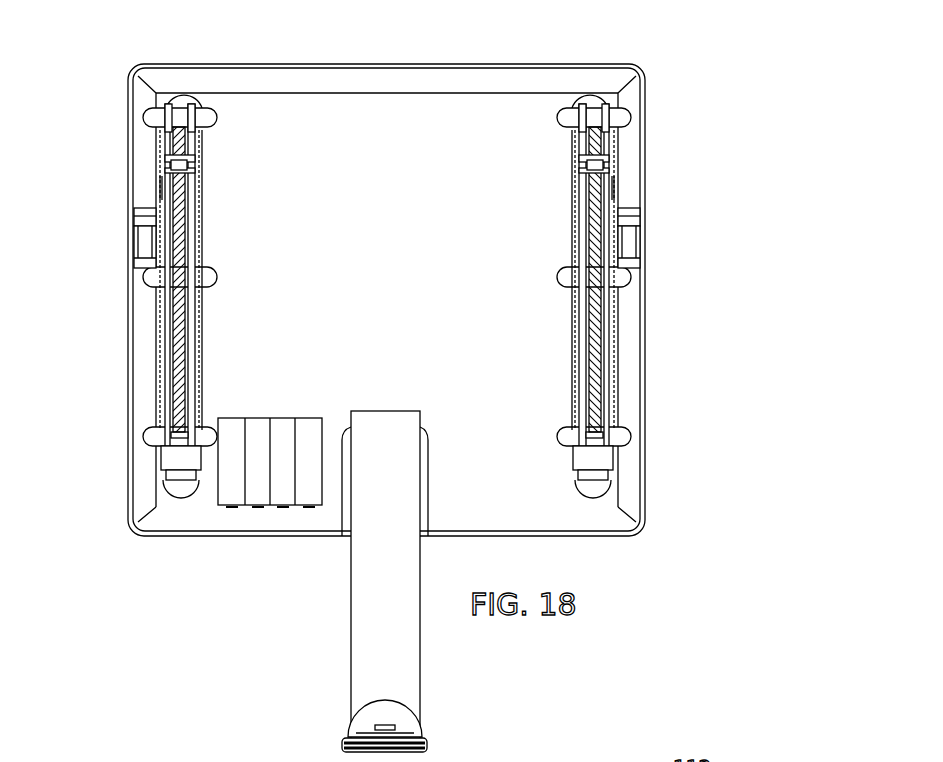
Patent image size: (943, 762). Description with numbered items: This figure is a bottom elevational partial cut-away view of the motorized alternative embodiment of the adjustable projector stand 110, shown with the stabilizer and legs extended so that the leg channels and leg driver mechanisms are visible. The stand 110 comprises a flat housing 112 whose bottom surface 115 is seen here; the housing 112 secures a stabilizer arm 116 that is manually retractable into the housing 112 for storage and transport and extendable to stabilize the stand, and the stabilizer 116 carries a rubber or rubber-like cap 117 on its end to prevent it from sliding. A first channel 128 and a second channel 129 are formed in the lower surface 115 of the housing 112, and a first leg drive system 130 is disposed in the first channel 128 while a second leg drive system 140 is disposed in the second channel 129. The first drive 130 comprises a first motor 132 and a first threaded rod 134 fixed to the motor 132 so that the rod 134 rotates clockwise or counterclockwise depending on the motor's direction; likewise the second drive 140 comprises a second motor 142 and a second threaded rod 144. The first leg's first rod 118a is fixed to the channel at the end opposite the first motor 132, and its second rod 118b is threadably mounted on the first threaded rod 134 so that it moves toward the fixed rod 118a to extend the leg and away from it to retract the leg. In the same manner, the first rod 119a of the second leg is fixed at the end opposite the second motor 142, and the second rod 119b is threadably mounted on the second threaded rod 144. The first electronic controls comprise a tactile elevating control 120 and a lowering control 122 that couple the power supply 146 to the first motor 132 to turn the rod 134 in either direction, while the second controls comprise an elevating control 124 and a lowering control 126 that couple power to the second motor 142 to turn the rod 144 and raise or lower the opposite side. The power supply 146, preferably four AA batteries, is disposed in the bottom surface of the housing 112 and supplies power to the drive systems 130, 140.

The projector stand 110 is at (782, 96).
The flat housing 112 is at (605, 66).
The bottom surface 115 is at (411, 269).
The stabilizer arm 116 is at (367, 659).
The cap 117 is at (422, 738).
The first rod 118a is at (620, 132).
The second rod 118b is at (606, 163).
The first rod 119a is at (163, 132).
The second rod 119b is at (168, 162).
The elevating control 120 is at (640, 223).
The lowering control 122 is at (640, 262).
The elevating control 124 is at (129, 262).
The lowering control 126 is at (129, 221).
The first channel 128 is at (618, 195).
The second channel 129 is at (163, 196).
The first leg drive system 130 is at (617, 347).
The first motor 132 is at (598, 462).
The first threaded rod 134 is at (600, 380).
The second leg drive system 140 is at (156, 345).
The second motor 142 is at (180, 462).
The second threaded rod 144 is at (178, 381).
The power supply 146 is at (227, 507).